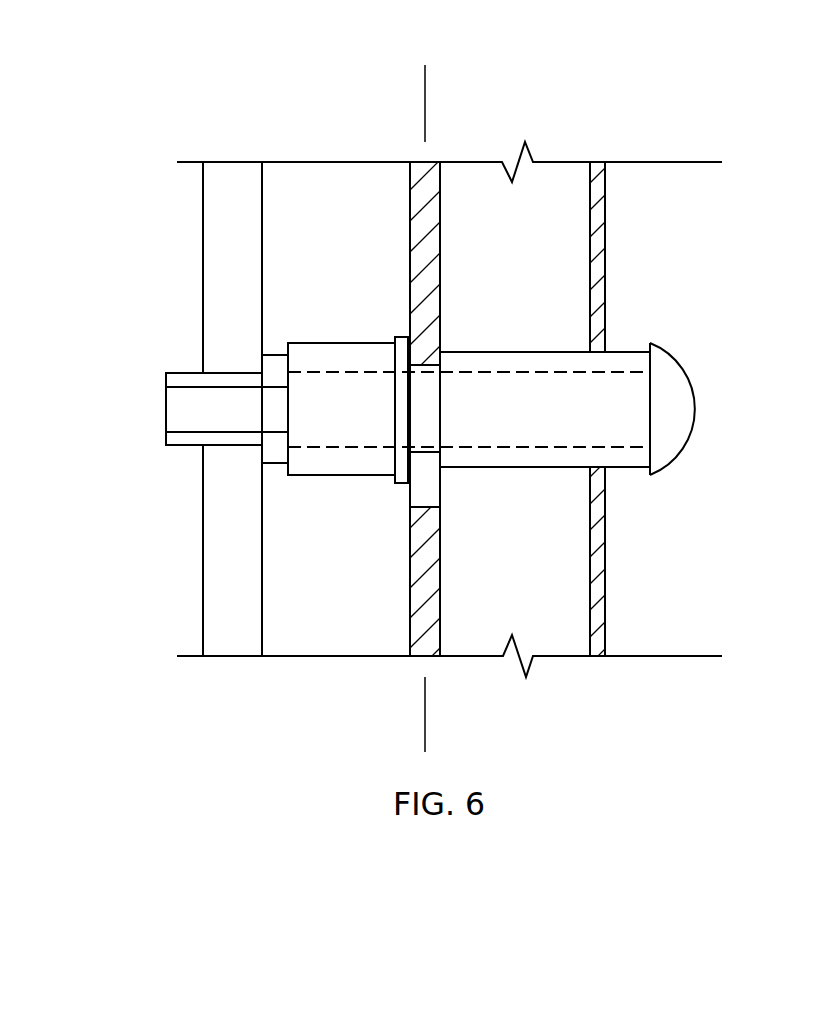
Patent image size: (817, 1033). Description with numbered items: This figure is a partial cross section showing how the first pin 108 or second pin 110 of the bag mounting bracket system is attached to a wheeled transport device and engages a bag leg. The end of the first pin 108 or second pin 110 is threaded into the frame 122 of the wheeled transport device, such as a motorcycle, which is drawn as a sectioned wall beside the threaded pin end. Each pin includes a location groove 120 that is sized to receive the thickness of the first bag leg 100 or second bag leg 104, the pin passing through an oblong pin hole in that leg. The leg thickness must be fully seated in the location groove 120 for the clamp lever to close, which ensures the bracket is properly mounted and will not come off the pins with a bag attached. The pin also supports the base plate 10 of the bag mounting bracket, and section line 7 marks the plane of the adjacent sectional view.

The section line 7- 7 is at (425, 65).
The base plate 10 is at (605, 240).
The first bag leg 100 is at (345, 439).
The second bag leg 104 is at (410, 630).
The first pin 108 is at (479, 527).
The second pin 110 is at (660, 477).
The location groove 120 is at (424, 365).
The frame 122 is at (224, 183).